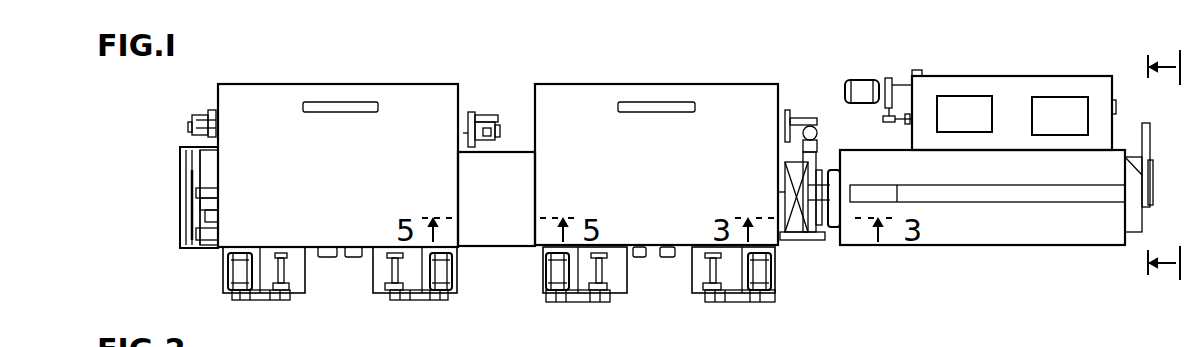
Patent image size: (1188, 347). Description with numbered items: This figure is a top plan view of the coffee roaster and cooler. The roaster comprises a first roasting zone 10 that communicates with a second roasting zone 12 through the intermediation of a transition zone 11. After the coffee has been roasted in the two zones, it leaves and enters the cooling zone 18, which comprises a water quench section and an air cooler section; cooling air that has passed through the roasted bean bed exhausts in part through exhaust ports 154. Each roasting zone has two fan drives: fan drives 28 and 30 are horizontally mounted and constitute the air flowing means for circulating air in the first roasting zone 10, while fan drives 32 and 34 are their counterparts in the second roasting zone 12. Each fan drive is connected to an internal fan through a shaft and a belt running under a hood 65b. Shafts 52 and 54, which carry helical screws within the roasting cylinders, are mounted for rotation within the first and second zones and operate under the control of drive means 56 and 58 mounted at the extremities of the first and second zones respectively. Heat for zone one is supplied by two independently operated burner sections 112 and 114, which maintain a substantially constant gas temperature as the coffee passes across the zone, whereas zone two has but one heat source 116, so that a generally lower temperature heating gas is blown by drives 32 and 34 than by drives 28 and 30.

The first roasting zone 10 is at (347, 194).
The transition zone 11 is at (497, 208).
The second roasting zone 12 is at (652, 193).
The cooling zone 18 is at (1045, 181).
The fan drive 28 is at (228, 272).
The fan drive 30 is at (455, 275).
The fan drive 32 is at (546, 275).
The fan drive 34 is at (773, 272).
The shaft 52 is at (218, 197).
The shaft 54 is at (778, 190).
The drive means 56 is at (178, 210).
The drive means 58 is at (834, 183).
The hood 65b is at (372, 300).
The burner section 112 is at (196, 116).
The burner section 114 is at (486, 113).
The heat source 116 is at (795, 118).
The exhaust ports 154 is at (983, 125).